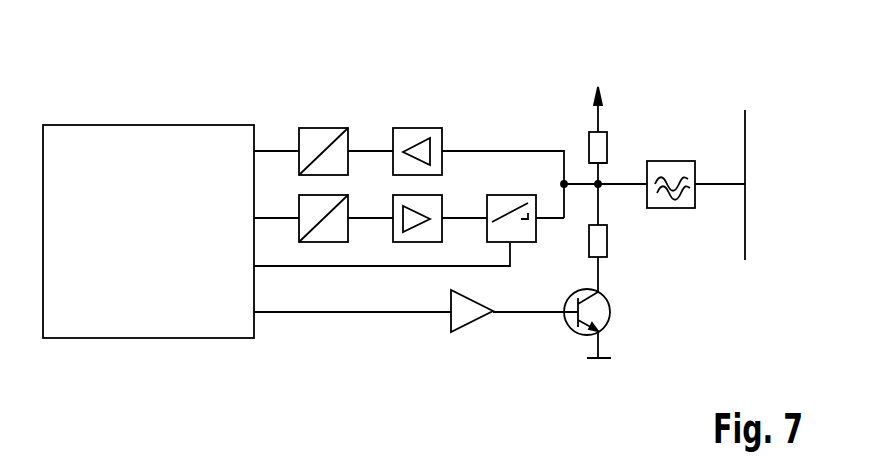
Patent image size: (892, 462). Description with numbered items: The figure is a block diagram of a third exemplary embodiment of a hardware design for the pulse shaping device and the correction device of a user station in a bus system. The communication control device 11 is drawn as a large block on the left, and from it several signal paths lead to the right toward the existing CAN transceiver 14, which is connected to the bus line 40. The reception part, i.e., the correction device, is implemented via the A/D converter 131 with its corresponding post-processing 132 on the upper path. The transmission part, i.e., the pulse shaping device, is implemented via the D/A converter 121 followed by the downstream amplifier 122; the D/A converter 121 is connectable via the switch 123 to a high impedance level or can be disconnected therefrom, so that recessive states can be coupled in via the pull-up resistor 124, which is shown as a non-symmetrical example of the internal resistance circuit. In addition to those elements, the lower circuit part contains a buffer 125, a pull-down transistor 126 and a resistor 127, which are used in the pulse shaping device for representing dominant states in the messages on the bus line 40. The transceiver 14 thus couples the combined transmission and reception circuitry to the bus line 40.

The communication control device 11 is at (148, 124).
The analog-to-digital converter 131 is at (323, 128).
The post-processing 132 is at (415, 128).
The digital-to-analog converter 121 is at (323, 243).
The downstream amplifier 122 is at (415, 243).
The switch 123 is at (525, 243).
The pull-up resistor 124 is at (589, 140).
The transceiver 14 is at (668, 161).
The bus line 40 is at (747, 128).
The resistor 127 is at (608, 242).
The pull-down transistor 126 is at (611, 312).
The buffer 125 is at (473, 326).